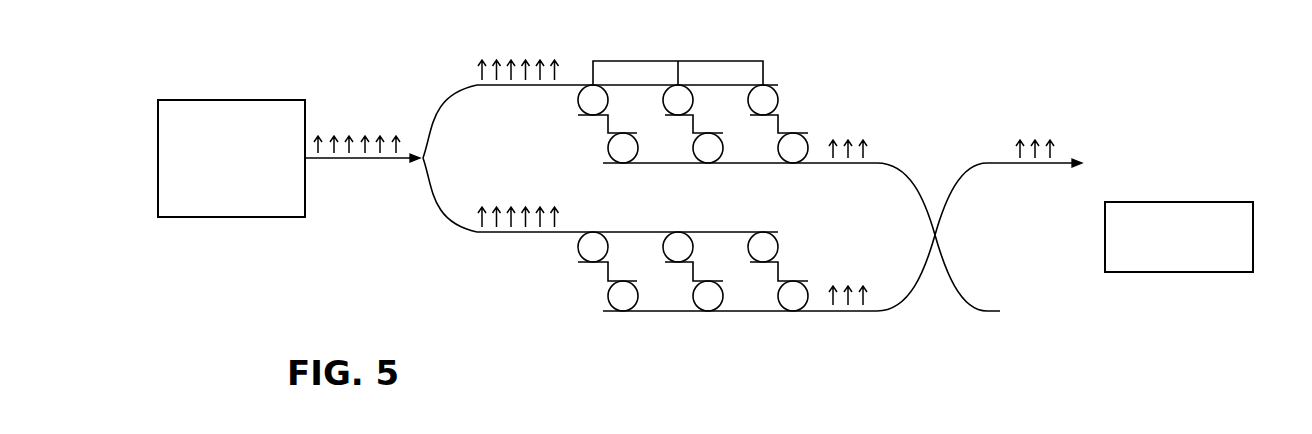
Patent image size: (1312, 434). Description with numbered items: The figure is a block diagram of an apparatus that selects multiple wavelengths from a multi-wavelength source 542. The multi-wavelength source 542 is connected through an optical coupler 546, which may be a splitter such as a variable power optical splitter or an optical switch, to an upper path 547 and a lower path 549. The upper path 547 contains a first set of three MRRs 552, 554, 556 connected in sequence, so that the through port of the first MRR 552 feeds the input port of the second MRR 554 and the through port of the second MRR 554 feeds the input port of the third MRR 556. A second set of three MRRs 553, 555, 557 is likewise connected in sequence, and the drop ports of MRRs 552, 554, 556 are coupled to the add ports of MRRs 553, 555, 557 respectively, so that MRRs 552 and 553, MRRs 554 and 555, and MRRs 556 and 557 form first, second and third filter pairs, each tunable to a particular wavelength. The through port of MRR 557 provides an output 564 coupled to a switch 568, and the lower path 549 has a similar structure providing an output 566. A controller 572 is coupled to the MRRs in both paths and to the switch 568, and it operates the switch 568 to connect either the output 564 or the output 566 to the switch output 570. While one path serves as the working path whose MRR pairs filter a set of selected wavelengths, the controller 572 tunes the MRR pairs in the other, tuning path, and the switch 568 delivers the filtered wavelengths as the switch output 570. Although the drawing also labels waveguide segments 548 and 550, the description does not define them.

The multi-wavelength source 542 is at (297, 86).
The optical coupler 546 is at (449, 163).
The upper path 547 is at (437, 104).
The upper waveguide arm 548 is at (497, 86).
The lower path 549 is at (473, 152).
The lower waveguide arm 550 is at (500, 233).
The first MRR 552 is at (579, 98).
The MRR 553 is at (612, 147).
The second MRR 554 is at (668, 108).
The MRR 555 is at (700, 158).
The third MRR 556 is at (752, 108).
The MRR 557 is at (787, 158).
The output 564 is at (842, 164).
The output 566 is at (842, 312).
The switch 568 is at (927, 236).
The switch output 570 is at (1038, 164).
The controller 572 is at (1157, 260).